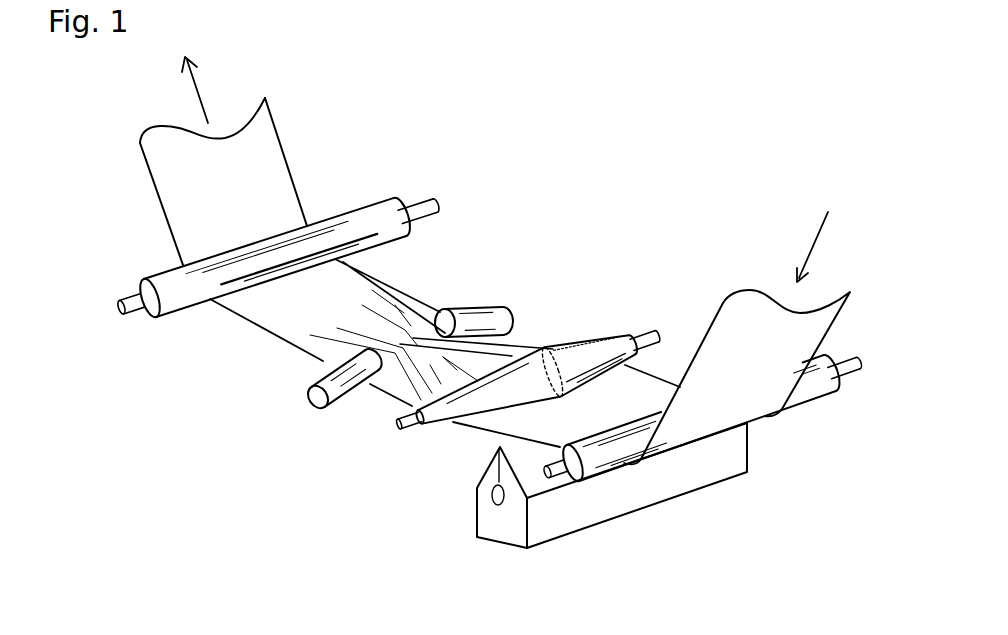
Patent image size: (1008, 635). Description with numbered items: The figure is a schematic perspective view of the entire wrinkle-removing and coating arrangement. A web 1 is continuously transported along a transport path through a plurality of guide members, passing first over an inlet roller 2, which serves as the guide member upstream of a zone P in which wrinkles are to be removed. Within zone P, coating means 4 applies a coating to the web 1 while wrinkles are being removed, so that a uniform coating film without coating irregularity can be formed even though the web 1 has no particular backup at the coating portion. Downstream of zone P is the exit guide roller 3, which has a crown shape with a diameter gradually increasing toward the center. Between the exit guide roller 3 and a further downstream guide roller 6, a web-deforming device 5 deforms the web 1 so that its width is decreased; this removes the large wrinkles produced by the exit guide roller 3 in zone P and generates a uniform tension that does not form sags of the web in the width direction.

The web 1 is at (243, 170).
The inlet roller 2 is at (813, 397).
The exit guide roller 3 is at (590, 340).
The coating means 4 is at (487, 523).
The web-deforming device 5 is at (478, 320).
The guide roller 6 is at (385, 203).